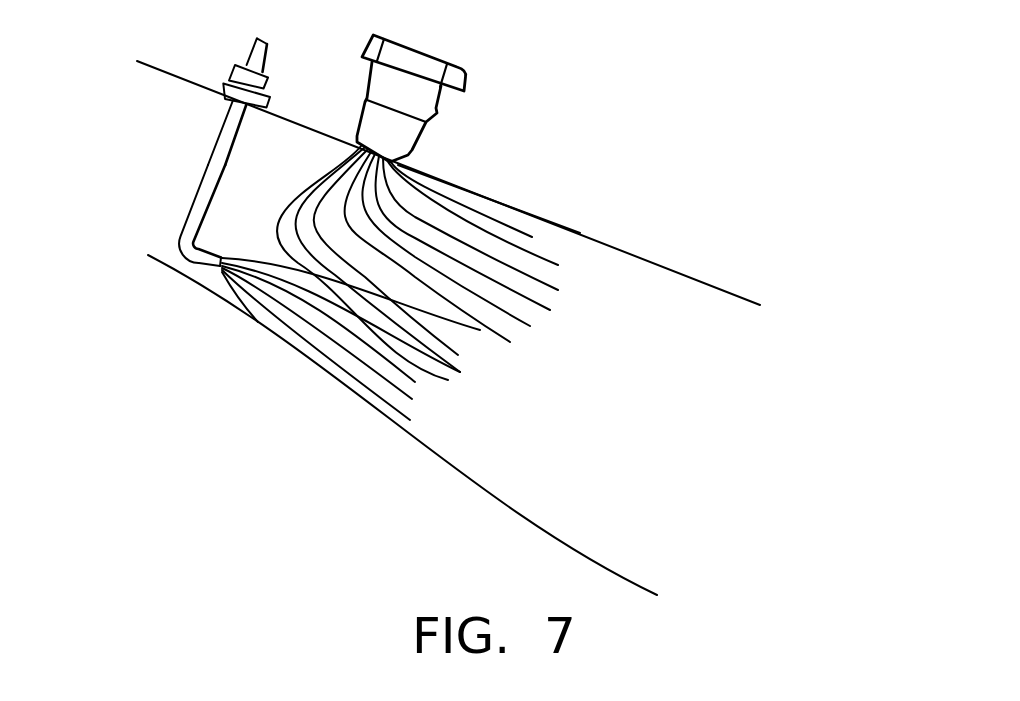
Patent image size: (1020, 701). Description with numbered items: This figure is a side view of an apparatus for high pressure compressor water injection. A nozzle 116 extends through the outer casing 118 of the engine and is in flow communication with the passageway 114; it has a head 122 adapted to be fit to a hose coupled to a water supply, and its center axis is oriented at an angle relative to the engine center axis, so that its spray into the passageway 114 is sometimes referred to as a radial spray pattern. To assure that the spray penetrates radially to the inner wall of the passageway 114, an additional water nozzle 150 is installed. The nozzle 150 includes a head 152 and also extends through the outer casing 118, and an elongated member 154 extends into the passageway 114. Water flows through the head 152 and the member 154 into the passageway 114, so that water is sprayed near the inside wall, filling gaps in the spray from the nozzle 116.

The passageway 114 is at (449, 328).
The nozzle 116 is at (471, 88).
The outer casing 118 is at (582, 233).
The head 122 is at (467, 80).
The additional water nozzle 150 is at (172, 152).
The head 152 is at (240, 77).
The elongated member 154 is at (198, 190).